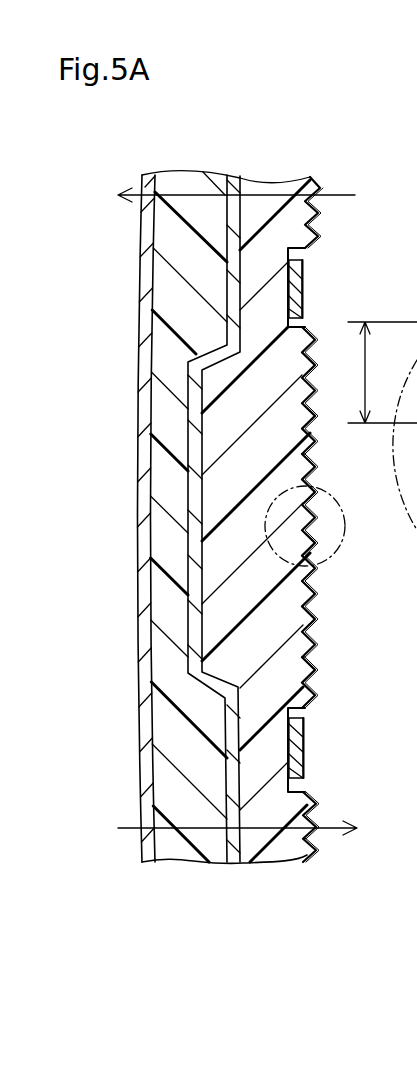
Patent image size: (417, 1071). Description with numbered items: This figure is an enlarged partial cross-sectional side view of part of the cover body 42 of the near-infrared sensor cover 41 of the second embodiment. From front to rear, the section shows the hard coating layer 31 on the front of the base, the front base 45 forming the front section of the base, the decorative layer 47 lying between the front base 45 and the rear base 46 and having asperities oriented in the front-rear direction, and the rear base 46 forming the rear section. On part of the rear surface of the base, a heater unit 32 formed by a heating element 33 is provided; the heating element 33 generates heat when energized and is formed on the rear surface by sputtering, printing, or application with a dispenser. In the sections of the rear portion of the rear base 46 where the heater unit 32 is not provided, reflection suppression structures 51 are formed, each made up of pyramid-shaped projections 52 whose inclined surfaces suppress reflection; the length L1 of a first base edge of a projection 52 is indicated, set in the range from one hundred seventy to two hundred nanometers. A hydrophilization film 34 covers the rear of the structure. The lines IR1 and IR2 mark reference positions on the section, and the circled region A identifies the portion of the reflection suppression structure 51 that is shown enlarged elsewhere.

The hard coating layer 31 is at (152, 182).
The front base 45 is at (181, 175).
The decorative layer 47 is at (235, 181).
The rear base 46 is at (272, 182).
The cover body 42 is at (305, 147).
The near-infrared sensor cover 41 is at (307, 478).
The hydrophilization film 34 is at (312, 592).
The reflection suppression structure 51 is at (318, 205).
The projection 52 is at (317, 236).
The heating element 33 is at (304, 286).
The heater unit 32 is at (349, 520).
The first imaginary line IR1 is at (338, 195).
The second imaginary line IR2 is at (345, 828).
The length L1 is at (366, 395).
The enlarged region A is at (345, 527).